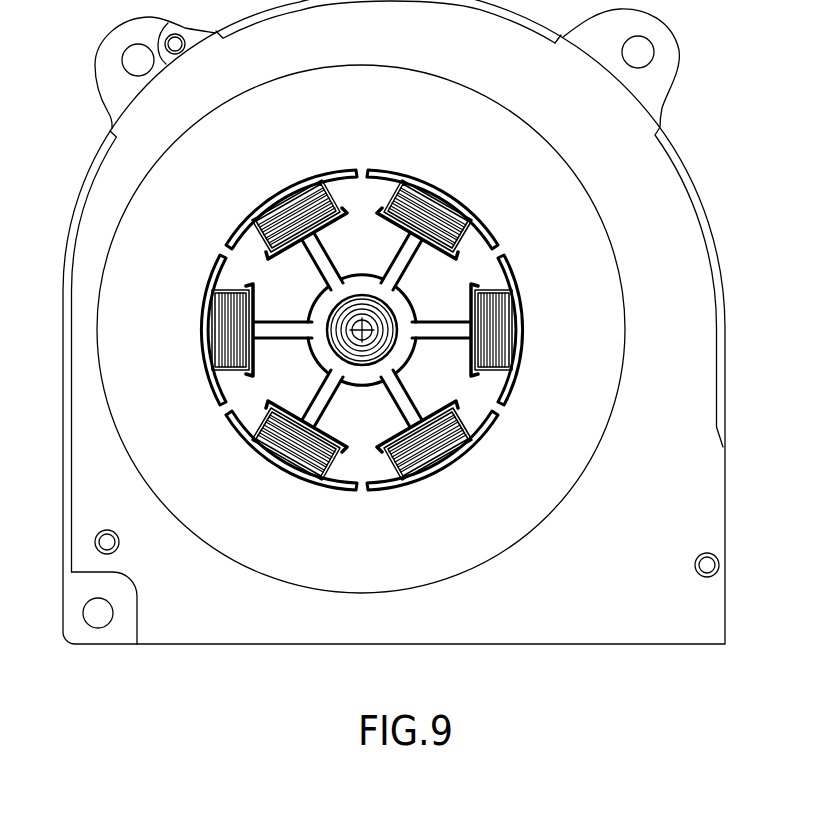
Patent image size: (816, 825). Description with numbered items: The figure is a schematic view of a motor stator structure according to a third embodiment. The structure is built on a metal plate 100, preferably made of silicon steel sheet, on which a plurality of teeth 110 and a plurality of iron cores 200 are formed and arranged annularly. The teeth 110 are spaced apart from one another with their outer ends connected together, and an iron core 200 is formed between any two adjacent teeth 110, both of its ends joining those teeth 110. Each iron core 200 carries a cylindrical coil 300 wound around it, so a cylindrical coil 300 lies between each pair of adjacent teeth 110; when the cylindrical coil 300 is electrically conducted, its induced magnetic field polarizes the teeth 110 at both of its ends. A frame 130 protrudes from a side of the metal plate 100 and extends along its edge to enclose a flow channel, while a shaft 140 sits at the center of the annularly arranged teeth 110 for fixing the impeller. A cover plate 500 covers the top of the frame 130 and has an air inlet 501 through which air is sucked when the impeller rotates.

The metal plate 100 is at (260, 548).
The teeth 110 is at (437, 352).
The frame 130 is at (75, 597).
The shaft 140 is at (343, 315).
The iron core 200 is at (502, 281).
The cylindrical coil 300 is at (497, 332).
The cover plate 500 is at (598, 627).
The air inlet 501 is at (497, 558).